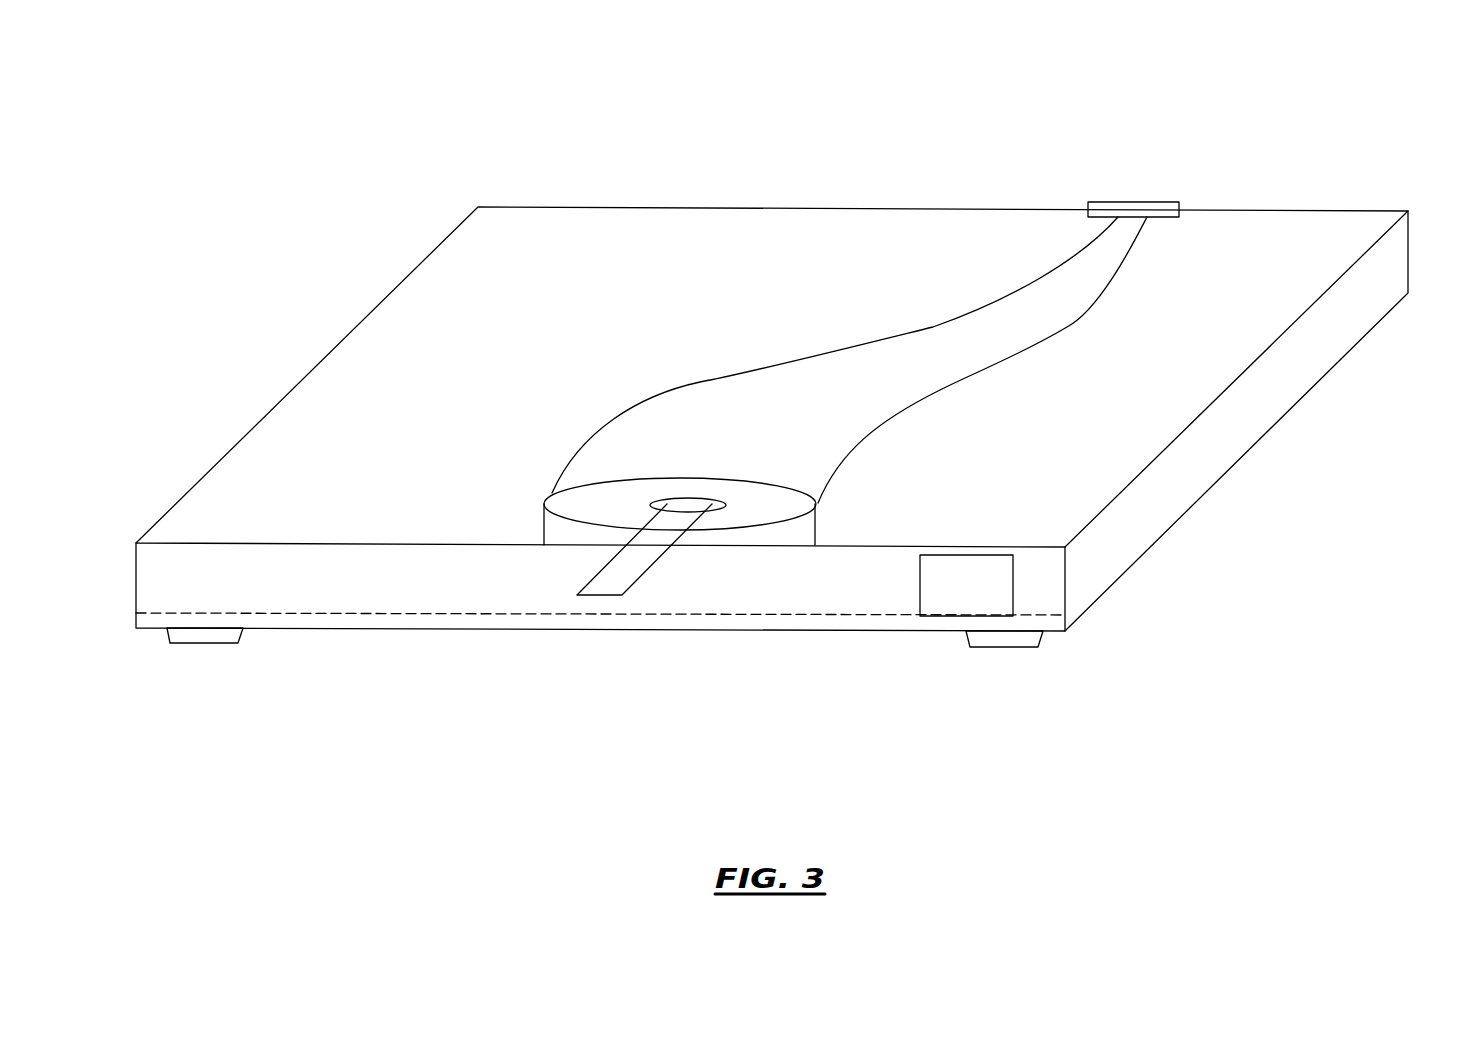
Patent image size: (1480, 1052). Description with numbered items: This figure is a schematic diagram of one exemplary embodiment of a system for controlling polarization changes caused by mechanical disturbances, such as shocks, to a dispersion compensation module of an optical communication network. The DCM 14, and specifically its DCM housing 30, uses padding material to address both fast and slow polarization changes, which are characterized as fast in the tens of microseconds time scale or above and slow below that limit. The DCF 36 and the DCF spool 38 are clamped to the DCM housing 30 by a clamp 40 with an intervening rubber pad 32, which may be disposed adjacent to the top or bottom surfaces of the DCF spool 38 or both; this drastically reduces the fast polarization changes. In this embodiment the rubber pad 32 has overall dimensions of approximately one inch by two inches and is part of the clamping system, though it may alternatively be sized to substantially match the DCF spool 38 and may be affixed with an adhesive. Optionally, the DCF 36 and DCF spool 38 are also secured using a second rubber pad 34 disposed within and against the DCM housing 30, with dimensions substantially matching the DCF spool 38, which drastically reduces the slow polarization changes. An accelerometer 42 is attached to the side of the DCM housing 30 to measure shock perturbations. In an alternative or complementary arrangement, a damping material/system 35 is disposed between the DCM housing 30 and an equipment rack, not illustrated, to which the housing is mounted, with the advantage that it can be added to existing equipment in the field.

The DCM 14 is at (1229, 115).
The DCM housing 30 is at (1364, 192).
The rubber pad 32 is at (663, 491).
The rubber pad 34 is at (366, 603).
The damping material/system 35 is at (196, 658).
The DCF 36 is at (864, 323).
The DCF spool 38 is at (764, 468).
The clamp 40 is at (633, 528).
The accelerometer 42 is at (984, 548).